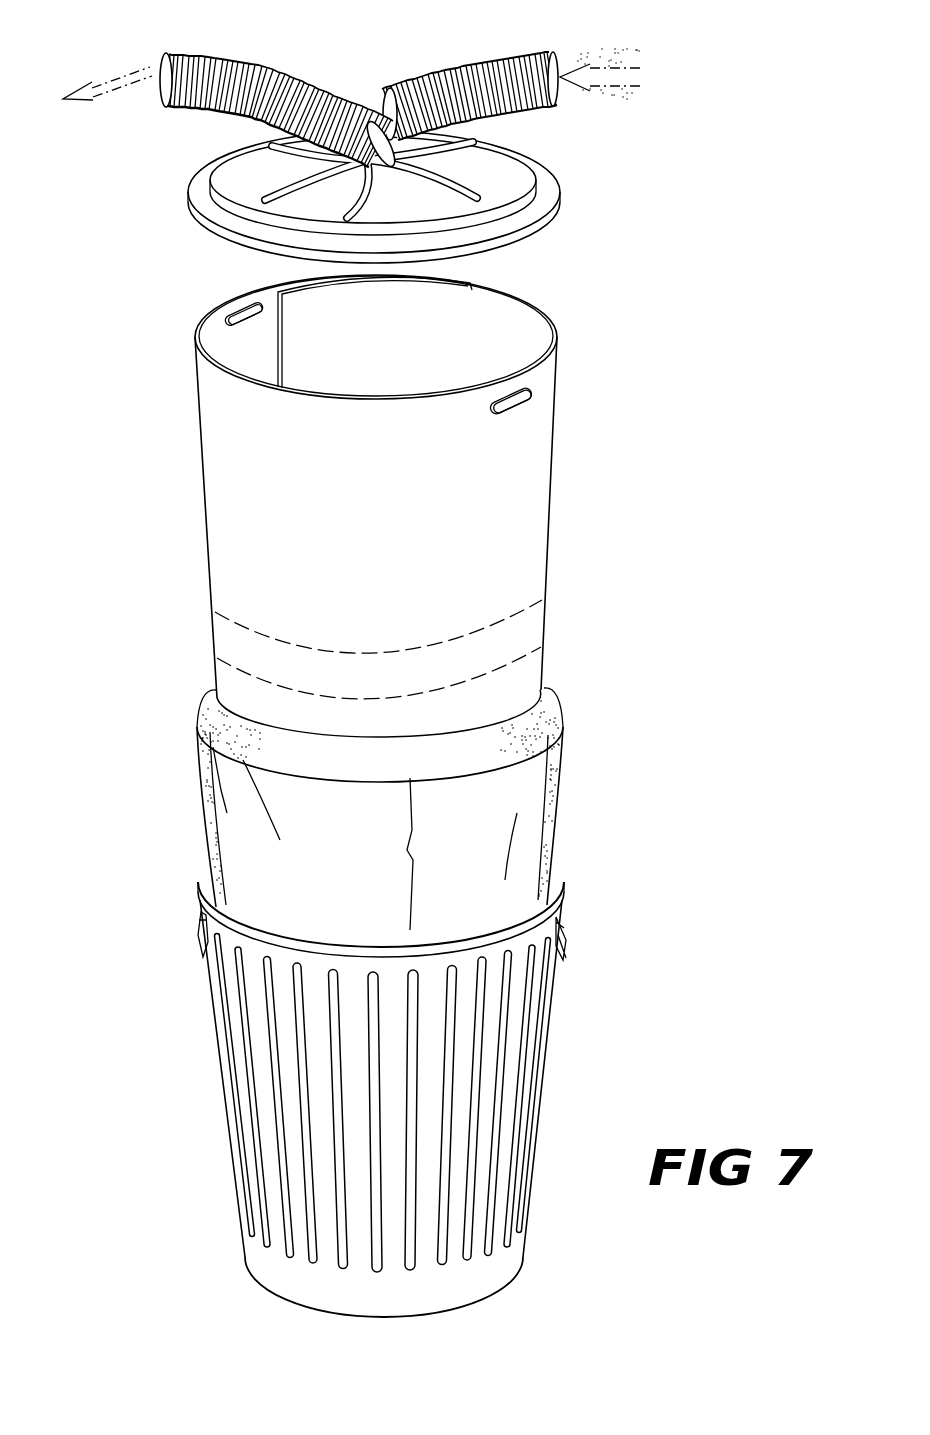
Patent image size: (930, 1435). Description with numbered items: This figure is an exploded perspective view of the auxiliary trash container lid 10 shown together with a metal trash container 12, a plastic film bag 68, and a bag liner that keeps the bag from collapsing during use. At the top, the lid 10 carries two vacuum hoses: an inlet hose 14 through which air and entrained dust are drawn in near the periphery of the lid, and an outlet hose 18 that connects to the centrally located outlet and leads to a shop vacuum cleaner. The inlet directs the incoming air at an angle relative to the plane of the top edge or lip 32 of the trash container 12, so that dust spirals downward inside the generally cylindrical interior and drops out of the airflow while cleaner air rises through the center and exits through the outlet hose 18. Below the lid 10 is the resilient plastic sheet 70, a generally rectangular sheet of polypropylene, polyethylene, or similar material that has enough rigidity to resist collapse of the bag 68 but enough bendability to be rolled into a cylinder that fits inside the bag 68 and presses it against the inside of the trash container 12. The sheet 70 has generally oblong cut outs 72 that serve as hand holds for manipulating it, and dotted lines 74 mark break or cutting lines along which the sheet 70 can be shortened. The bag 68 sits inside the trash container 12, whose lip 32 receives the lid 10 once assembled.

The auxiliary trash container lid 10 is at (560, 181).
The trash container 12 is at (550, 987).
The inlet hose 14 is at (503, 58).
The outlet hose 18 is at (290, 68).
The top edge or lip 32 is at (208, 885).
The plastic film bag 68 is at (535, 765).
The resilient plastic sheet 70 is at (215, 497).
The oblong cut outs 72 is at (248, 308).
The dotted lines 74 is at (512, 672).